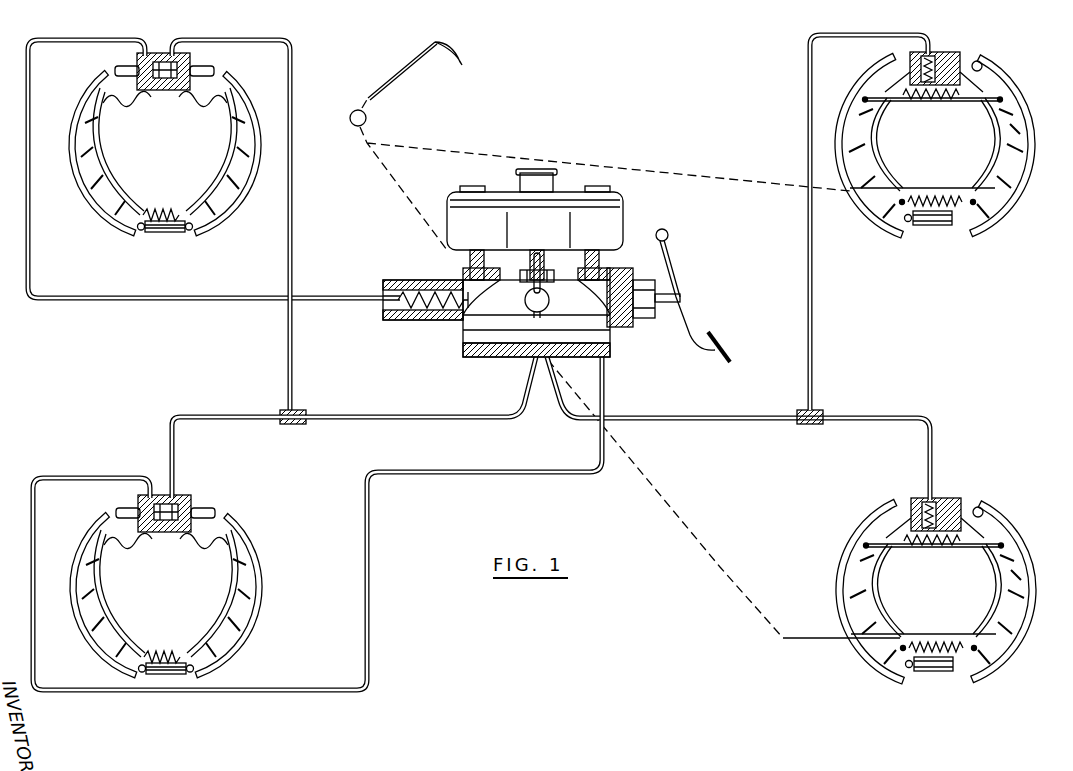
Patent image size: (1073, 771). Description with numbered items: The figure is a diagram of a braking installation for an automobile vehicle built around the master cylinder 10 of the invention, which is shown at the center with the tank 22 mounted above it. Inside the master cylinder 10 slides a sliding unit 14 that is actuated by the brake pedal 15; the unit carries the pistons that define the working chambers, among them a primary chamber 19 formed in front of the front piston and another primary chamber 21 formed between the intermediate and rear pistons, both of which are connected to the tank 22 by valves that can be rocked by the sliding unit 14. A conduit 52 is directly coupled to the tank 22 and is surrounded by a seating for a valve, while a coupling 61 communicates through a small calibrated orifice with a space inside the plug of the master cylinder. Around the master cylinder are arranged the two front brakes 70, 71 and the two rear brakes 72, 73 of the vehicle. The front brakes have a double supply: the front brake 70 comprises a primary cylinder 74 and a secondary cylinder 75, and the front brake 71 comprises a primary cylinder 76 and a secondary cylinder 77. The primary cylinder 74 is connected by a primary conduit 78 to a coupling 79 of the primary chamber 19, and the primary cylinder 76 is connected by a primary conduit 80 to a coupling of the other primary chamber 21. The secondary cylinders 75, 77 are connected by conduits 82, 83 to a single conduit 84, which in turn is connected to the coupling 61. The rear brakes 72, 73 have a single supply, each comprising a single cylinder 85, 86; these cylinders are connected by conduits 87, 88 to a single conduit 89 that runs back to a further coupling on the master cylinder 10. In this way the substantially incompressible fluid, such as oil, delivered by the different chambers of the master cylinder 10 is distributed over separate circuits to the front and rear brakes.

The master cylinder 10 is at (620, 335).
The sliding unit 14 is at (660, 322).
The brake pedal 15 is at (729, 352).
The primary chamber 19 is at (418, 292).
The primary chamber 21 is at (622, 272).
The tank 22 is at (521, 212).
The conduit 52 is at (531, 277).
The coupling 61 is at (532, 320).
The front brake 70 is at (98, 222).
The front brake 71 is at (262, 582).
The rear brake 72 is at (1029, 172).
The rear brake 73 is at (1032, 597).
The primary cylinder 74 is at (138, 70).
The secondary cylinder 75 is at (190, 57).
The primary cylinder 76 is at (140, 505).
The secondary cylinder 77 is at (189, 508).
The primary conduit 78 is at (161, 301).
The coupling 79 is at (381, 296).
The primary conduit 80 is at (369, 562).
The conduit 82 is at (291, 237).
The conduit 83 is at (241, 416).
The single conduit 84 is at (405, 417).
The single cylinder 85 is at (938, 57).
The single cylinder 86 is at (934, 502).
The conduit 87 is at (811, 270).
The conduit 88 is at (905, 414).
The single conduit 89 is at (739, 416).